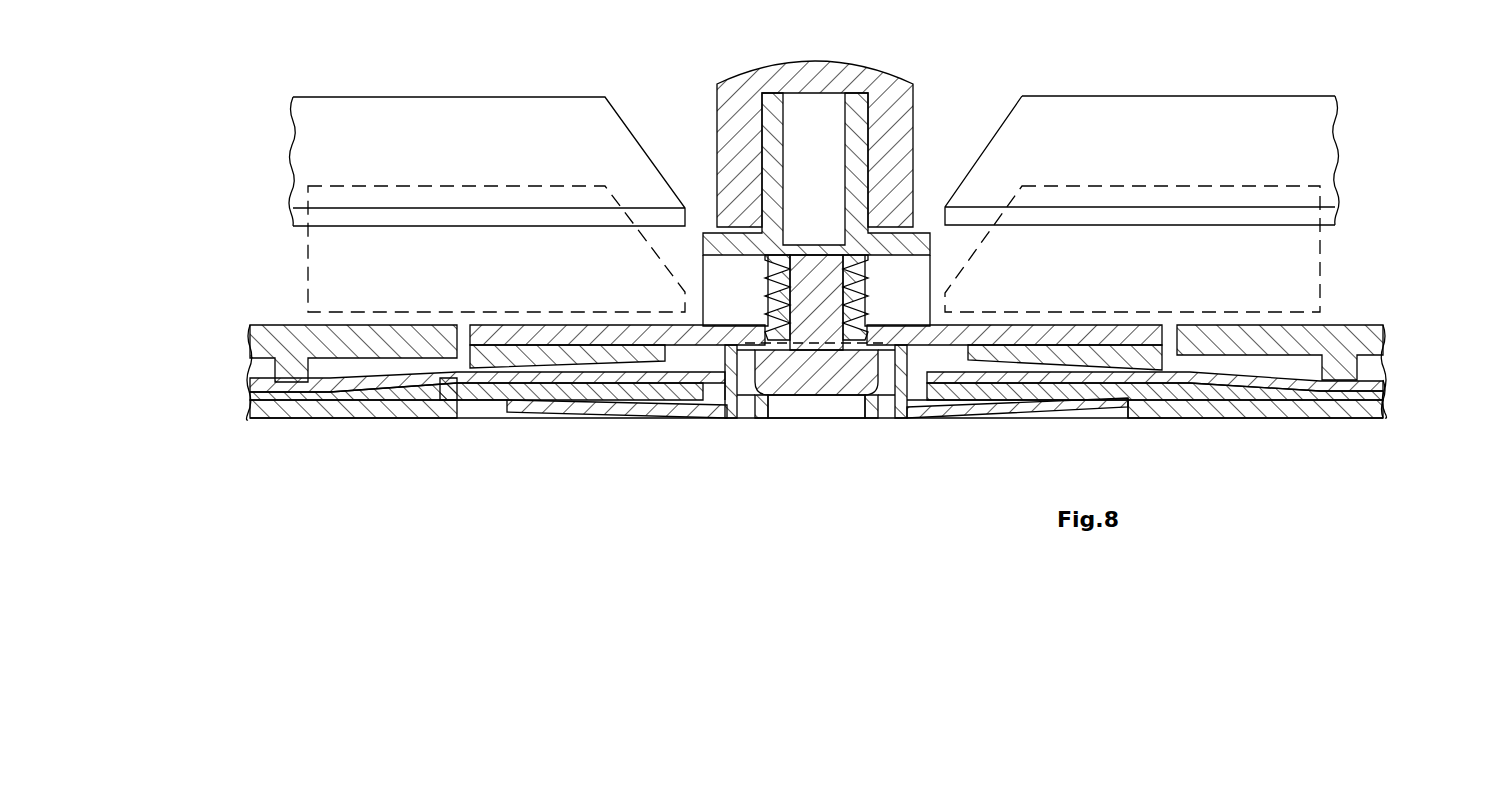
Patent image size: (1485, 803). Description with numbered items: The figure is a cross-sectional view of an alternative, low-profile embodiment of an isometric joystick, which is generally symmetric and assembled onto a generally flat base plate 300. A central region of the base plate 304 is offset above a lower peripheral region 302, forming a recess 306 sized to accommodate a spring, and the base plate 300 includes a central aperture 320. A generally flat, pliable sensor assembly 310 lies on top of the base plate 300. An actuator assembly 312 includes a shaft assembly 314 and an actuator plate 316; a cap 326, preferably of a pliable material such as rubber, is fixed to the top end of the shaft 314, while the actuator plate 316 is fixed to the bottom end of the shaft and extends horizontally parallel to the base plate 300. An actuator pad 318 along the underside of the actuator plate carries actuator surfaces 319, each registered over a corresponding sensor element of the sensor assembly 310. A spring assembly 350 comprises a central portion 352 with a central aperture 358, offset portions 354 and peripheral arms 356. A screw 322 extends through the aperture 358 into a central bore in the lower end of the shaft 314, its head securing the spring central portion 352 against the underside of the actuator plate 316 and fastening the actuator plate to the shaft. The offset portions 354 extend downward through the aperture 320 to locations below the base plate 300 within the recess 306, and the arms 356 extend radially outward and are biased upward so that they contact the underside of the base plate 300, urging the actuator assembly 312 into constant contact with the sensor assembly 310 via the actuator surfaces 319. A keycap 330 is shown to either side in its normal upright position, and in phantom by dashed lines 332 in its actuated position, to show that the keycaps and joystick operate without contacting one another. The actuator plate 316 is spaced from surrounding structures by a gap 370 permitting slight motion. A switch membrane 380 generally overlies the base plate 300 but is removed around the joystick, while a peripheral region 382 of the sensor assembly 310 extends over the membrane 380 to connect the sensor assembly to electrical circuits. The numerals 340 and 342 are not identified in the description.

The base plate 300 is at (1319, 427).
The lower peripheral region 302 is at (1255, 420).
The central region of the base plate 304 is at (1160, 403).
The recess 306 is at (1143, 412).
The sensor assembly 310 is at (1384, 365).
The actuator assembly 312 is at (673, 113).
The shaft assembly 314 is at (931, 222).
The actuator plate 316 is at (1030, 325).
The actuator pad 318 is at (1170, 325).
The actuator surfaces 319 is at (1010, 405).
The central aperture 320 is at (752, 396).
The screw 322 is at (840, 426).
The cap 326 is at (760, 64).
The keycap 330 is at (1245, 95).
The dashed lines 332 is at (1140, 183).
The right conductive layer 340 is at (1384, 394).
The right end block 342 is at (1380, 325).
The spring assembly 350 is at (887, 428).
The central portion 352 is at (893, 354).
The offset portion 354 is at (722, 357).
The peripheral arms 356 is at (566, 414).
The central aperture 358 is at (807, 356).
The gap 370 is at (462, 325).
The switch membrane 380 is at (250, 401).
The peripheral region 382 is at (250, 381).